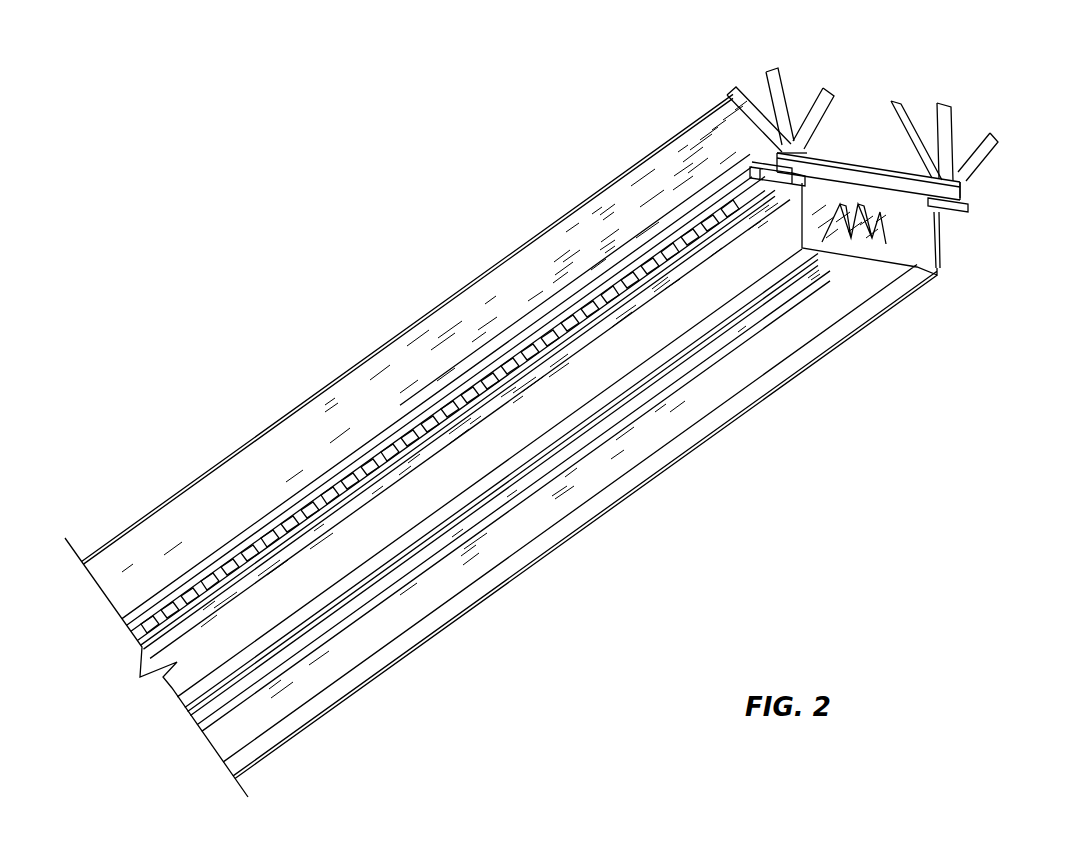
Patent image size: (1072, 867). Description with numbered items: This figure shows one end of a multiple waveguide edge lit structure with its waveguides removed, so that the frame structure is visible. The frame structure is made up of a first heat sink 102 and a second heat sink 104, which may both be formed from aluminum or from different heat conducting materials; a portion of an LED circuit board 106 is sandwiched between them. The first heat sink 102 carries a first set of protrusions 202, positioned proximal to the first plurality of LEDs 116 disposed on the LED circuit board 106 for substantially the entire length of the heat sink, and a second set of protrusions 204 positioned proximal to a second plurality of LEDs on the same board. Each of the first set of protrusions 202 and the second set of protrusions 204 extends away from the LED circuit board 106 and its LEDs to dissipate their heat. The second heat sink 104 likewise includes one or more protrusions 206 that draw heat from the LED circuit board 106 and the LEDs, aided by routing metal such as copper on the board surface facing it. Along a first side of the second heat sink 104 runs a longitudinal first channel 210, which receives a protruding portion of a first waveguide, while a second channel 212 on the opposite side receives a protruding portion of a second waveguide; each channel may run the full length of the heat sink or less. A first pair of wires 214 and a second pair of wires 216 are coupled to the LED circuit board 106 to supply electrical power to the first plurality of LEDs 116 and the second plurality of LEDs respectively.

The first heat sink 102 is at (843, 157).
The second heat sink 104 is at (923, 268).
The LED circuit board 106 is at (857, 160).
The first plurality of LEDs 116 is at (553, 340).
The first set of protrusions 202 is at (805, 108).
The second set of protrusions 204 is at (925, 117).
The protrusions 206 is at (853, 262).
The first channel 210 is at (670, 270).
The second channel 212 is at (940, 220).
The first pair of wires 214 is at (750, 167).
The second pair of wires 216 is at (960, 212).